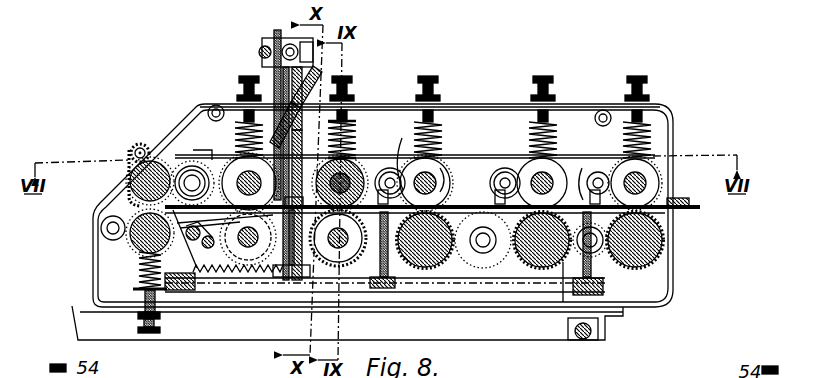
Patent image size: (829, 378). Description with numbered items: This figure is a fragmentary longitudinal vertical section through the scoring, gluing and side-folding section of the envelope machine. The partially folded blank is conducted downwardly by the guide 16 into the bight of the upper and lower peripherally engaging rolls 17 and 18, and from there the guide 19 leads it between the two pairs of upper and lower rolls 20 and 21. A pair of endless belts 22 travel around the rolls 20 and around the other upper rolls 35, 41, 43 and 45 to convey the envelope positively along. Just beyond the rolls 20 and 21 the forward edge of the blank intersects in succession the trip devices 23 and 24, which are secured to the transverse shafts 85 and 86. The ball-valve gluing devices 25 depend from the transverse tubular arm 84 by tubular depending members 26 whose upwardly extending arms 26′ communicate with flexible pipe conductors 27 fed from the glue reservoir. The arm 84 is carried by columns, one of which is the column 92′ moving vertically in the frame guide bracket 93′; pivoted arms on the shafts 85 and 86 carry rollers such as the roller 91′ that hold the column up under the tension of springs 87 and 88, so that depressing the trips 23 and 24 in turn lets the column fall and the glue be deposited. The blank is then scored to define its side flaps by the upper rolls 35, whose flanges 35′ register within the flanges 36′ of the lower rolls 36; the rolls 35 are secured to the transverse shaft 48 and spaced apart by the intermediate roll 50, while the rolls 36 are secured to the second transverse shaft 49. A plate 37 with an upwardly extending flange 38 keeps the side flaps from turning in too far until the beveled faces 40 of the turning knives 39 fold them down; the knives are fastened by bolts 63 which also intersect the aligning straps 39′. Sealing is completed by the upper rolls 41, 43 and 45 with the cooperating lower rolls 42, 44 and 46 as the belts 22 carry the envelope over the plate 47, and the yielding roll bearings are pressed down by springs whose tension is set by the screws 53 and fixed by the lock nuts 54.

The guide 16 is at (131, 152).
The upper roll 17 is at (128, 185).
The lower roll 18 is at (133, 243).
The guide 19 is at (190, 169).
The upper rolls 20 is at (249, 183).
The lower rolls 21 is at (248, 237).
The endless belts 22 is at (480, 153).
The trigger or trip device 23 is at (432, 196).
The trigger or trip device 24 is at (225, 218).
The ball-valve gluing device 25 is at (303, 140).
The tubular depending member 26 is at (272, 62).
The tubular upwardly extending arm 26′ is at (280, 82).
The flexible pipe conductor 27 is at (306, 80).
The upper scoring roll 35 is at (357, 160).
The flange 35′ is at (357, 150).
The lower scoring roll 36 is at (344, 250).
The flange 36′ is at (336, 255).
The plate 37 is at (205, 145).
The flange 38 is at (338, 236).
The turning knife 39 is at (467, 205).
The strap 39′ is at (529, 182).
The beveled face 40 is at (385, 175).
The upper sealing roll 41 is at (448, 179).
The lower sealing roll 42 is at (434, 256).
The upper sealing roll 43 is at (556, 165).
The lower sealing roll 44 is at (522, 258).
The upper sealing roll 45 is at (672, 150).
The lower sealing roll 46 is at (626, 266).
The plate 47 is at (483, 241).
The transverse shaft 48 is at (352, 124).
The second transverse shaft 49 is at (300, 278).
The intermediate roll 50 is at (333, 162).
The screw 53 is at (438, 80).
The lock nut 54 is at (440, 98).
The bolt 63 is at (492, 158).
The transverse tubular arm 84 is at (290, 44).
The transverse shaft 85 is at (190, 270).
The transverse shaft 86 is at (207, 250).
The spring 87 is at (185, 292).
The spring 88 is at (240, 274).
The roller 91′ is at (290, 262).
The column 92′ is at (330, 100).
The frame guide bracket 93′ is at (318, 82).